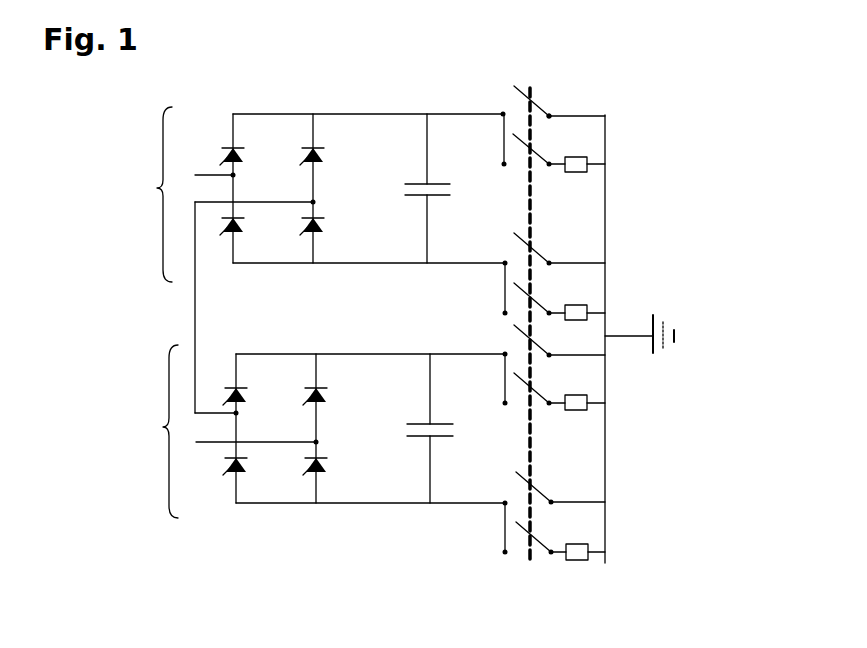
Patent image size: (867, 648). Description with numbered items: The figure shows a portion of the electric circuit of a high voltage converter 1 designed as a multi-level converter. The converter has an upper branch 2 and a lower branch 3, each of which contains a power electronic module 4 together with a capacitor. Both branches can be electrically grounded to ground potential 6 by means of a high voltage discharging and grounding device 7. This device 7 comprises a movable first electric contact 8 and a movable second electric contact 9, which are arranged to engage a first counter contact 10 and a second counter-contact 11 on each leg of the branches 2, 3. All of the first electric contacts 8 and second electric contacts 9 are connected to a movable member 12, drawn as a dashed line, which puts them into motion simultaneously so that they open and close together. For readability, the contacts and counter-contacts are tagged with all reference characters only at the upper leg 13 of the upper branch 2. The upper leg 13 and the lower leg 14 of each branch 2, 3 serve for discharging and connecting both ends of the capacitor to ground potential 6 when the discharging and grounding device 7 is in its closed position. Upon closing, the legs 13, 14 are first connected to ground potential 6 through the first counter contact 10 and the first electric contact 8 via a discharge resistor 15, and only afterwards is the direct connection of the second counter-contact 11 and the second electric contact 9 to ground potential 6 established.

The high voltage converter 1 is at (684, 130).
The upper branch 2 is at (148, 194).
The lower branch 3 is at (151, 431).
The power electronic module 4 is at (351, 311).
The ground potential 6 is at (690, 323).
The high voltage discharging and grounding device 7 is at (553, 98).
The first electric contact 8 is at (521, 150).
The second electric contact 9 is at (515, 86).
The first counter contact 10 is at (498, 177).
The second counter-contact 11 is at (499, 103).
The movable member 12 is at (538, 565).
The upper leg 13 is at (384, 114).
The lower leg 14 is at (362, 265).
The discharge resistor 15 is at (415, 170).